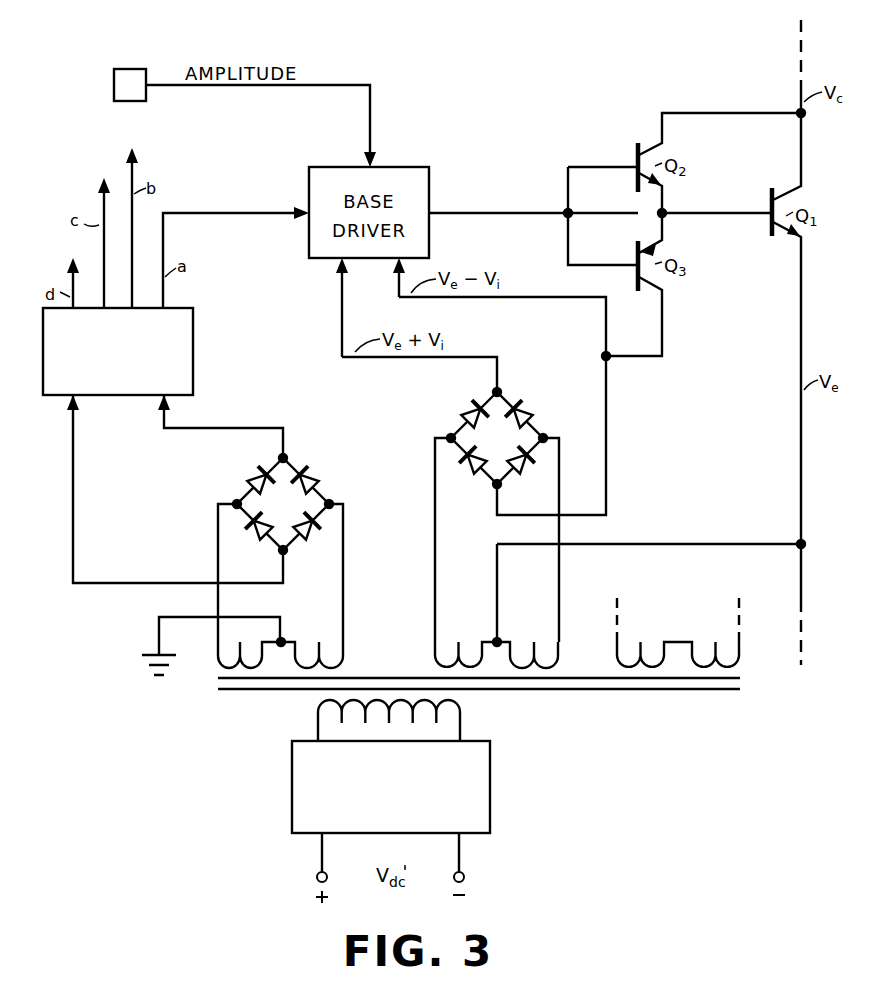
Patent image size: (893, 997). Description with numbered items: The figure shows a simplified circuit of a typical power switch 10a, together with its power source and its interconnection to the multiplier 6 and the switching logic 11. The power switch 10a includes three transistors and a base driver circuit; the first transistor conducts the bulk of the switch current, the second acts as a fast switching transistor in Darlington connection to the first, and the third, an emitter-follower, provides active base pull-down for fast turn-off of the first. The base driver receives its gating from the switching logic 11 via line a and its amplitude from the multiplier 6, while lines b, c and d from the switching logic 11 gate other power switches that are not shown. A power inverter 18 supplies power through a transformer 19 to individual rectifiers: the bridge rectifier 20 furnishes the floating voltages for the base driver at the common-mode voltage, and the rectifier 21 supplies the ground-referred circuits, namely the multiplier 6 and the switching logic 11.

The multiplier 6 is at (112, 80).
The power switch 10a is at (510, 124).
The switching logic 11 is at (197, 344).
The power inverter 18 is at (493, 769).
The transformer 19 is at (638, 693).
The bridge rectifier 20 is at (484, 447).
The rectifier 21 is at (270, 513).